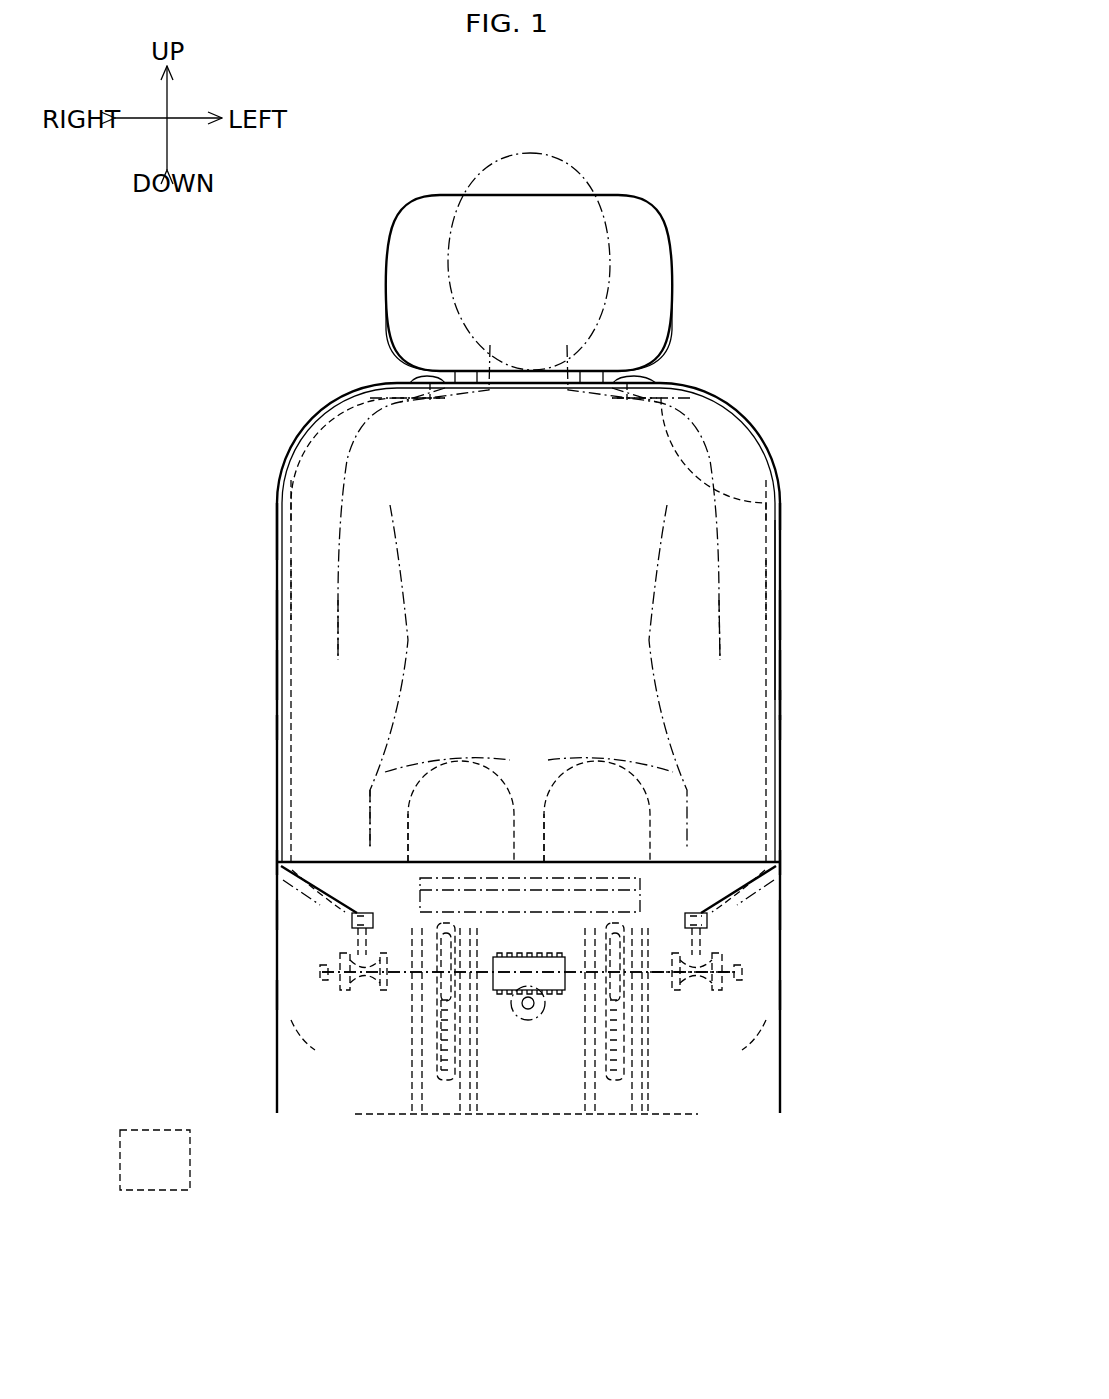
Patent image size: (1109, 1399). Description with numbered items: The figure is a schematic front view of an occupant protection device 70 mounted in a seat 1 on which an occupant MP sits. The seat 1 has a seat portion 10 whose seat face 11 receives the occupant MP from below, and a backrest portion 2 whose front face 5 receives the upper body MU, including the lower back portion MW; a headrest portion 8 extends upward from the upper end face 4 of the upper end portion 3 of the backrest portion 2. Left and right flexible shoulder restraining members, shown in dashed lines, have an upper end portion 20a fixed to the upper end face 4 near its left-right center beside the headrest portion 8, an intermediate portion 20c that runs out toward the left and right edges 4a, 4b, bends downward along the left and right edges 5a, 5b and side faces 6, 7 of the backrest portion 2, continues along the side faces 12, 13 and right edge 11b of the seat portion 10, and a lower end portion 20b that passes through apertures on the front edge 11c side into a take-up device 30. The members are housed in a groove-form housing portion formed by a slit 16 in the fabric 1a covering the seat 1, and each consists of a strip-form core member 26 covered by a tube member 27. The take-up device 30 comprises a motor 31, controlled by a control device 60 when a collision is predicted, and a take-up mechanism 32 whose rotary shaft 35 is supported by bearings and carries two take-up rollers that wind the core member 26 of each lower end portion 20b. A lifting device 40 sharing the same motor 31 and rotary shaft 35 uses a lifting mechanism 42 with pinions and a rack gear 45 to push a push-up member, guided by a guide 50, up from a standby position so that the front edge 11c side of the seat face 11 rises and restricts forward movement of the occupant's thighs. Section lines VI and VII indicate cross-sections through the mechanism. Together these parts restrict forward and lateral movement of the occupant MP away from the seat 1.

The seat 1 is at (698, 200).
The fabric 1a is at (780, 703).
The backrest portion 2 is at (262, 497).
The upper end portion 3 is at (280, 440).
The upper end face 4 is at (343, 382).
The left edge 4a is at (727, 368).
The right edge 4b is at (304, 407).
The front face 5 is at (642, 562).
The left edge 5a is at (794, 510).
The right edge 5b is at (262, 558).
The left side face 6 is at (790, 612).
The right side face 7 is at (268, 612).
The headrest portion 8 is at (432, 195).
The seat portion 10 is at (264, 997).
The seat face 11 is at (440, 835).
The right edge 11b is at (265, 858).
The front edge 11c is at (478, 875).
The side face 12 is at (800, 915).
The side face 13 is at (262, 913).
The slit 16 is at (277, 725).
The upper end portion 20a is at (430, 372).
The lower end portion 20b is at (358, 994).
The intermediate portion 20c is at (280, 598).
The core member 26 is at (351, 910).
The tube member 27 is at (290, 850).
The take-up device 30 is at (517, 1040).
The motor 31 is at (531, 1024).
The take-up mechanism 32 is at (566, 1010).
The rotary shaft 35 is at (657, 980).
The lifting device 40 is at (383, 1042).
The lifting mechanism 42 is at (445, 1105).
The rack gear 45 is at (432, 1036).
The guide 50 is at (440, 1060).
The control device 60 is at (165, 1150).
The occupant protection device 70 is at (737, 1148).
The occupant MP is at (585, 140).
The upper body MU is at (597, 525).
The lower back portion MW is at (680, 787).
The section line VI is at (625, 845).
The section line VII is at (570, 790).